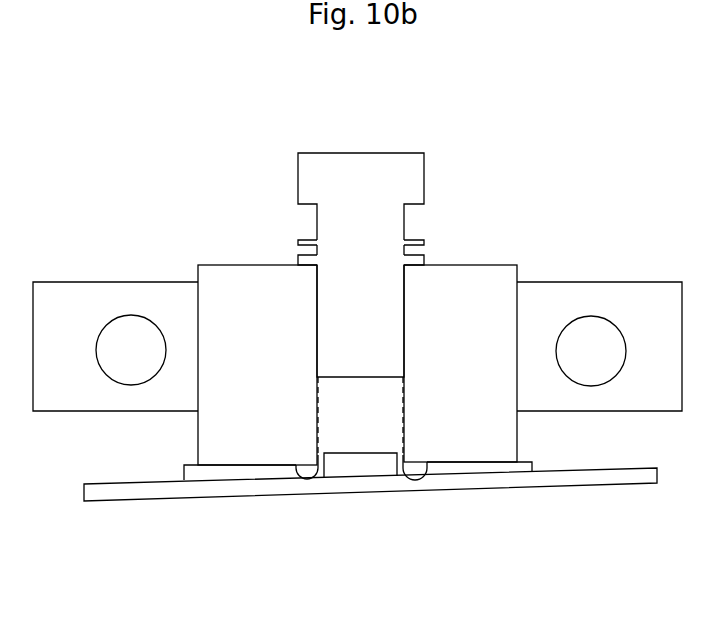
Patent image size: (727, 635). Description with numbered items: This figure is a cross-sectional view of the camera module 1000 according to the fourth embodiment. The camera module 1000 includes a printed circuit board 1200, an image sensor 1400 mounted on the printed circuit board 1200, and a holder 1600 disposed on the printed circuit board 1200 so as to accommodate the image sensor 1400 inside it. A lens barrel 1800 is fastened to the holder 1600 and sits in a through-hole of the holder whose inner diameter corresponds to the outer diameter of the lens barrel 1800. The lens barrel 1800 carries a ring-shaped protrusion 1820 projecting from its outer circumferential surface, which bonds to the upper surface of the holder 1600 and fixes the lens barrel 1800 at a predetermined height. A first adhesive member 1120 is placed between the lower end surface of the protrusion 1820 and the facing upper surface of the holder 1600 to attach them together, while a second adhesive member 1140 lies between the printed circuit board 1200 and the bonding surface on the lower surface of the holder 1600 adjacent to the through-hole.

The camera module 1000 is at (687, 126).
The lens barrel 1800 is at (415, 173).
The protrusion 1820 is at (420, 247).
The first adhesive member 1120 is at (420, 263).
The second adhesive member 1140 is at (540, 463).
The holder 1600 is at (245, 283).
The printed circuit board 1200 is at (155, 492).
The image sensor 1400 is at (358, 465).